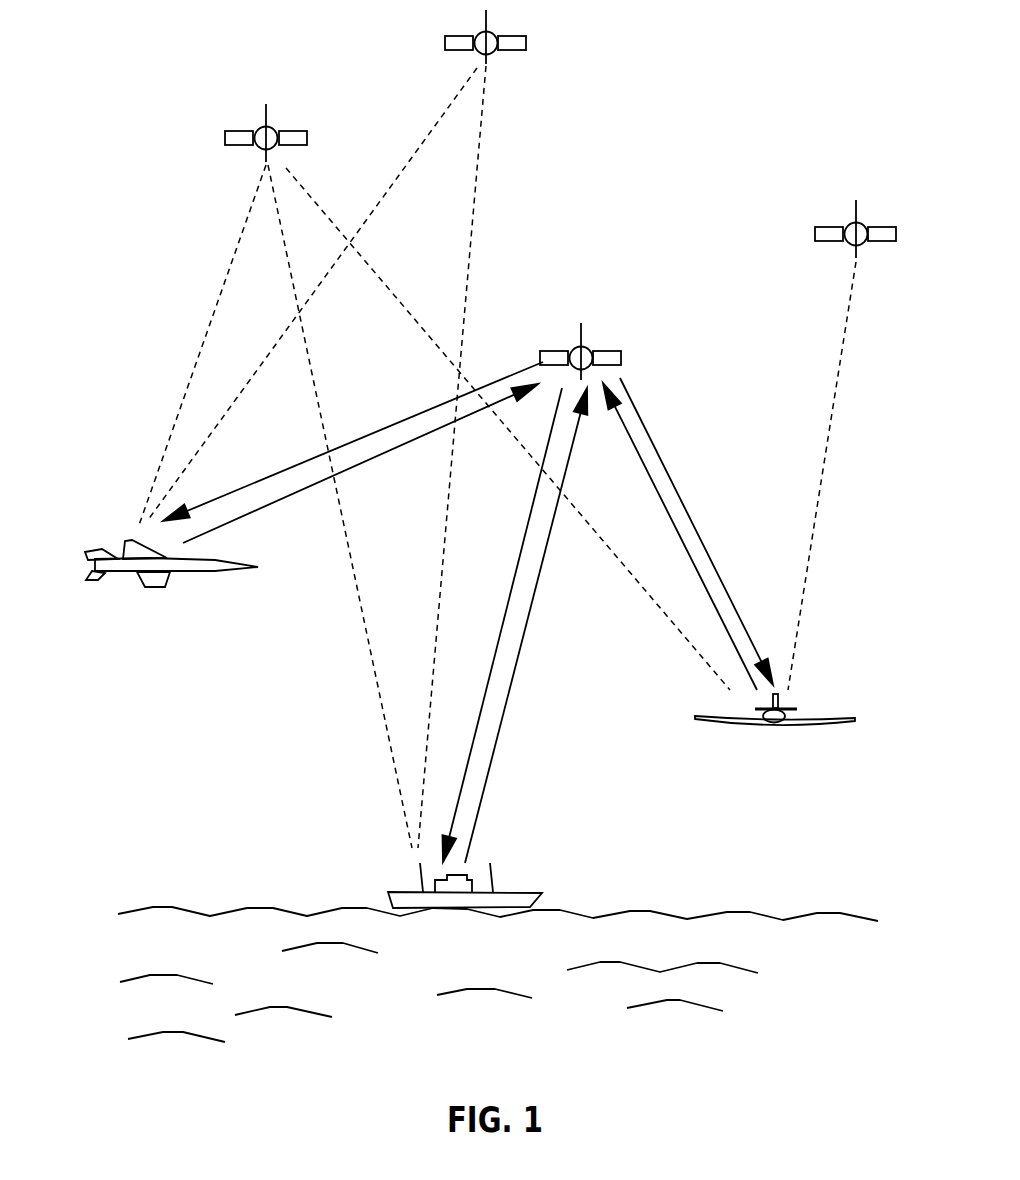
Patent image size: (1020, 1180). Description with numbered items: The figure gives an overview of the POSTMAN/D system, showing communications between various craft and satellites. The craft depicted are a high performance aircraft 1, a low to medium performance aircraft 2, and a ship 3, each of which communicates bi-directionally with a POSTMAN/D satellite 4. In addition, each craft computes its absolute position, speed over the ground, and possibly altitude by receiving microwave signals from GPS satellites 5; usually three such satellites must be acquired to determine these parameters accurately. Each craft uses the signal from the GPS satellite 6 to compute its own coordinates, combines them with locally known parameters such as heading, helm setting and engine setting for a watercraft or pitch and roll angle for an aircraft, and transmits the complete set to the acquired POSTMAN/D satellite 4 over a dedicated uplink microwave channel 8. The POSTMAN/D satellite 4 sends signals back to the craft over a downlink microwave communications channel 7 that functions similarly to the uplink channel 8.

The high performance aircraft 1 is at (187, 585).
The low to medium performance aircraft 2 is at (780, 735).
The ship 3 is at (513, 880).
The POSTMAN/D satellite 4 is at (558, 345).
The GPS satellite 5 is at (285, 122).
The GPS satellite signal 6 is at (349, 612).
The downlink microwave communications channel 7 is at (500, 658).
The uplink microwave channel 8 is at (513, 698).